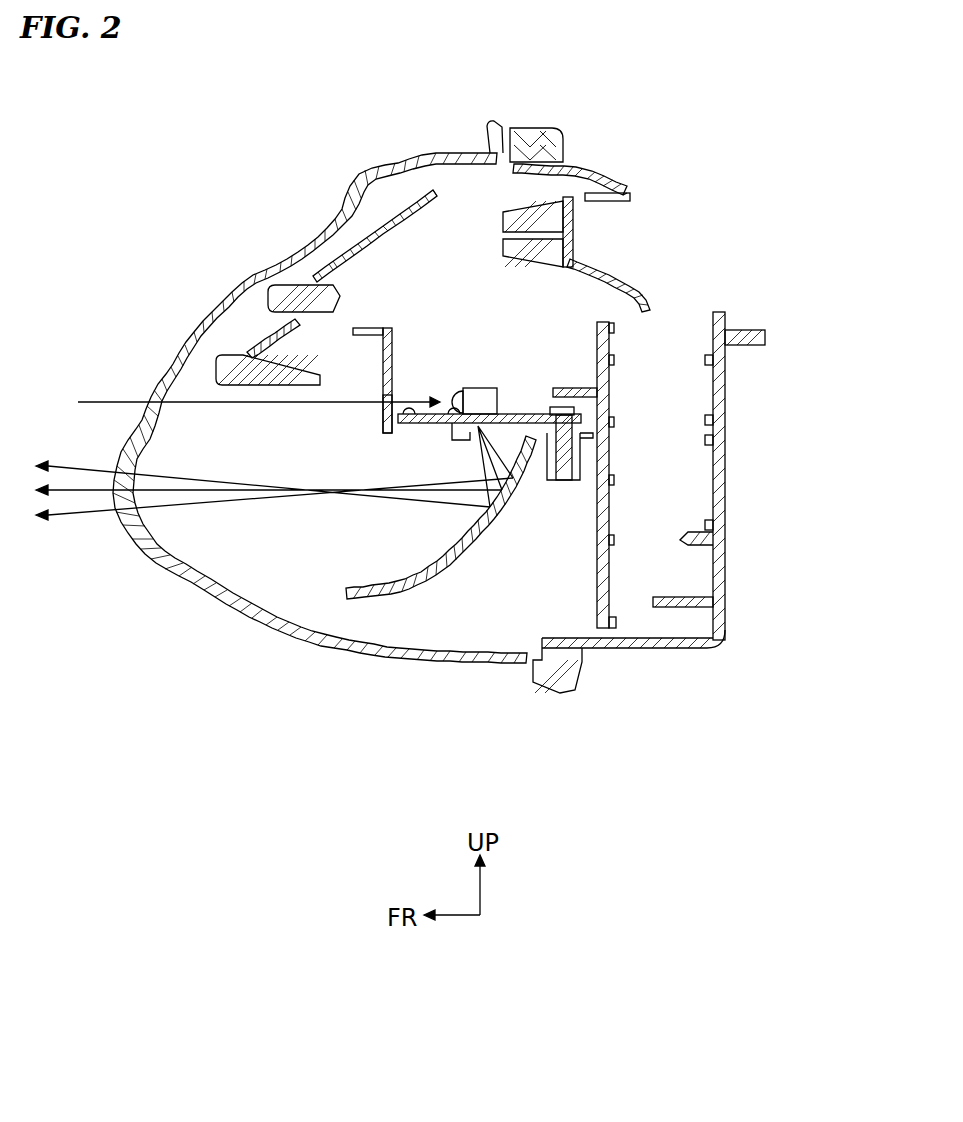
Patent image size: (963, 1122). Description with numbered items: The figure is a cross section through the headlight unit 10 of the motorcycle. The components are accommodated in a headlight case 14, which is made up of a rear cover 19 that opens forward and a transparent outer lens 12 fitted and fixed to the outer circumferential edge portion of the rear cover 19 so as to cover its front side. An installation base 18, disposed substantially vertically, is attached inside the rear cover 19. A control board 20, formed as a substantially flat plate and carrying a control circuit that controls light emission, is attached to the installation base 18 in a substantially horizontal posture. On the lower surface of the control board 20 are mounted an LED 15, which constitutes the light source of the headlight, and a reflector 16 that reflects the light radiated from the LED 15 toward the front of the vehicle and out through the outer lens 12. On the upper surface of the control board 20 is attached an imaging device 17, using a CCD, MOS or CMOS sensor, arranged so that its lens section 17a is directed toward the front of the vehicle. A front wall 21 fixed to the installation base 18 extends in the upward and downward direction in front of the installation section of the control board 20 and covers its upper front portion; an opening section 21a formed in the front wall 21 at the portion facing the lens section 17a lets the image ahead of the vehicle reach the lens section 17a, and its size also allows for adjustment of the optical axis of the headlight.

The headlight unit 10 is at (347, 155).
The outer lens 12 is at (243, 279).
The headlight case 14 is at (492, 397).
The LED 15 is at (495, 423).
The reflector 16 is at (440, 572).
The imaging device 17 is at (483, 388).
The lens section 17a is at (453, 392).
The installation base 18 is at (608, 455).
The rear cover 19 is at (722, 518).
The control board 20 is at (538, 412).
The front wall 21 is at (383, 352).
The opening section 21a is at (383, 405).